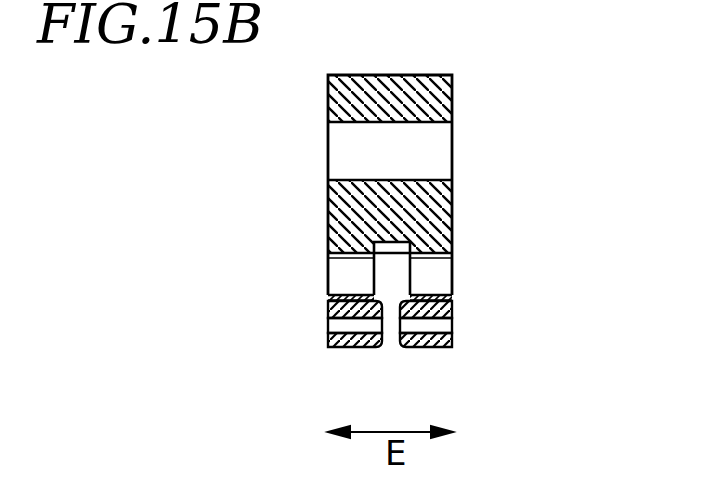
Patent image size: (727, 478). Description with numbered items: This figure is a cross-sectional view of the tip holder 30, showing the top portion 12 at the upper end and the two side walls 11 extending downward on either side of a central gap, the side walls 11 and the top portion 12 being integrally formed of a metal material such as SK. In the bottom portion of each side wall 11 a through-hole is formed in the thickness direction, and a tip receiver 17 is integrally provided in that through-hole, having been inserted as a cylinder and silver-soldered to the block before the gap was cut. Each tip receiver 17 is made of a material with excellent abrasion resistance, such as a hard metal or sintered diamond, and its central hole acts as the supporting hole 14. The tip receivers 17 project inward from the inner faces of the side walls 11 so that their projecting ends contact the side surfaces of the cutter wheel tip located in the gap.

The tip holder 30 is at (426, 215).
The top portion 12 is at (449, 91).
The side wall 11 is at (330, 300).
The supporting hole 14 is at (337, 325).
The tip receiver 17 is at (348, 348).